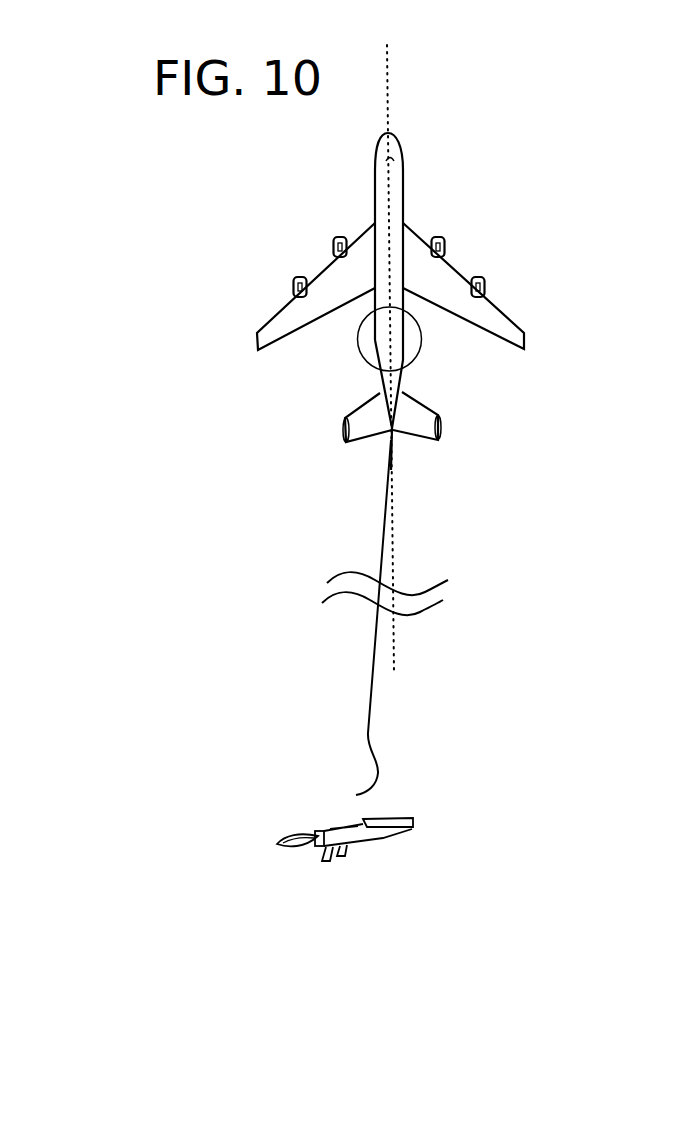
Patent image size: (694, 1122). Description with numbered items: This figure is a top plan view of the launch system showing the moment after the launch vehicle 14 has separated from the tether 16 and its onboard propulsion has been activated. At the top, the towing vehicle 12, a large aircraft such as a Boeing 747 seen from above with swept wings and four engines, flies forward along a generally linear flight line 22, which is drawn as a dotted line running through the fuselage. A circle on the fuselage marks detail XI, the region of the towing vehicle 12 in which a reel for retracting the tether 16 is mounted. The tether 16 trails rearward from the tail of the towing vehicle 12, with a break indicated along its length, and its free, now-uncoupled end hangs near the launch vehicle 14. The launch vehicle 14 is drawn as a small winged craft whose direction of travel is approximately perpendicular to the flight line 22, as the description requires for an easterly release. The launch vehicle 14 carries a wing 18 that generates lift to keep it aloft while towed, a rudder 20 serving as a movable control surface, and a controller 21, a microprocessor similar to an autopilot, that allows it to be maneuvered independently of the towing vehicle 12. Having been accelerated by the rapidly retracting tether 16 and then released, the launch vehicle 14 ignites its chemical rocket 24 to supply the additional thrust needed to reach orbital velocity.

The towing vehicle 12 is at (399, 195).
The flight line 22 is at (392, 123).
The detail XI is at (362, 362).
The tether 16 is at (375, 705).
The launch vehicle 14 is at (325, 810).
The wing 18 is at (340, 827).
The rudder 20 is at (330, 857).
The controller 21 is at (410, 830).
The chemical rocket 24 is at (317, 843).